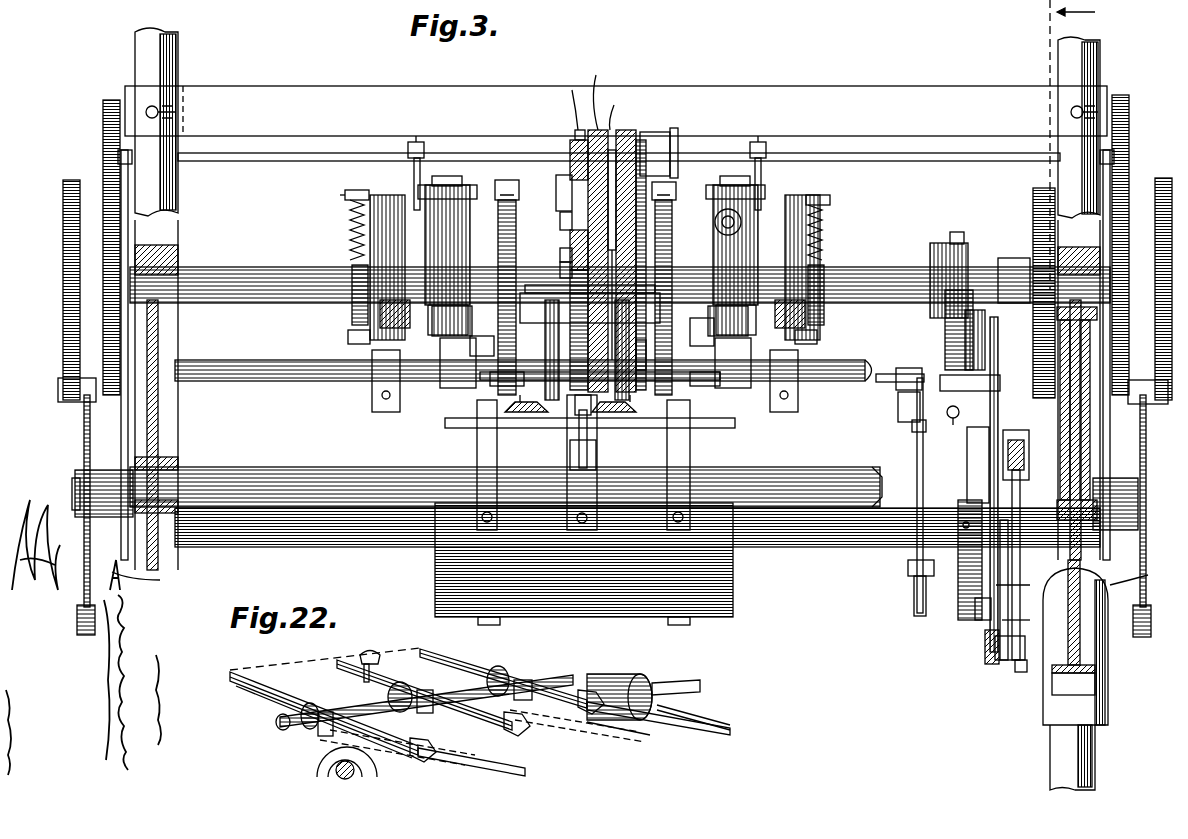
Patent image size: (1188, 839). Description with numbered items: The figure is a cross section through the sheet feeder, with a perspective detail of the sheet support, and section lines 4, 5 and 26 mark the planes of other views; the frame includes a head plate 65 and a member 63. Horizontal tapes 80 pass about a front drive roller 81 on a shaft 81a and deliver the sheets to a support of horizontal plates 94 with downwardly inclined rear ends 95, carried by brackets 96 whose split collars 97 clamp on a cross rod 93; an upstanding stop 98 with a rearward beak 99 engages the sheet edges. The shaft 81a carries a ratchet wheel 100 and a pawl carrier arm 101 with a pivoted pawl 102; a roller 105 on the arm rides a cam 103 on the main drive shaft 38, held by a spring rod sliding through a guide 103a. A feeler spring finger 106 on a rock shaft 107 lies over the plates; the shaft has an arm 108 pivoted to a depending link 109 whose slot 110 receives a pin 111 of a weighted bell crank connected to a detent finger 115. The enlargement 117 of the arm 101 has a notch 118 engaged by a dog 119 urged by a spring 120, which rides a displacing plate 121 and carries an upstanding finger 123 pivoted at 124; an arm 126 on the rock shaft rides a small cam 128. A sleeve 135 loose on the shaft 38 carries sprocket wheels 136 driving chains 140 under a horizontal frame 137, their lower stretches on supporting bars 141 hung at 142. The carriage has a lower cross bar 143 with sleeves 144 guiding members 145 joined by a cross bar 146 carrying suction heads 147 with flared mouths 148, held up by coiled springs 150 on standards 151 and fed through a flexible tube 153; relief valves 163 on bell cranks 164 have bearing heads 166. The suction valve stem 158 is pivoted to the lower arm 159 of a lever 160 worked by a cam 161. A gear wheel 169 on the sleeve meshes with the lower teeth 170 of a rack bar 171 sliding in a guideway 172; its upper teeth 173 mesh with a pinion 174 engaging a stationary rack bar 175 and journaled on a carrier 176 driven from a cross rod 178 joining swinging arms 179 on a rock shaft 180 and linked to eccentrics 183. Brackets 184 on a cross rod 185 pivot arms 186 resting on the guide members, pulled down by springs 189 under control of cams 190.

In FIG. 3, the section line 4 is at (1030, 560).
In FIG. 3, the section line 5 is at (745, 60).
In FIG. 3, the section line 26 is at (1060, 145).
In FIG. 3, the main drive shaft 38 is at (245, 270).
In FIG. 3, the supporting post 63 is at (1085, 743).
In FIG. 3, the head plate 65 is at (165, 245).
In FIG. 3, the forwardly bearing tapes 80 is at (500, 620).
In FIG. 22, the forwardly bearing tapes 80 is at (528, 770).
In FIG. 3, the front roller 81 is at (440, 560).
In FIG. 3, the shaft 81a is at (320, 550).
In FIG. 22, the shaft 81a is at (703, 698).
In FIG. 3, the cross rod 93 is at (290, 466).
In FIG. 22, the cross rod 93 is at (278, 722).
In FIG. 3, the horizontal plates 94 is at (466, 424).
In FIG. 22, the horizontal plates 94 is at (270, 680).
In FIG. 22, the downwardly inclined rear ends 95 is at (412, 746).
In FIG. 22, the brackets 96 is at (322, 710).
In FIG. 3, the split collars 97 is at (500, 519).
In FIG. 22, the split collars 97 is at (318, 730).
In FIG. 3, the upstanding stop 98 is at (583, 462).
In FIG. 22, the upstanding stop 98 is at (364, 678).
In FIG. 22, the hook or beak 99 is at (378, 654).
In FIG. 3, the ratchet wheel 100 is at (962, 512).
In FIG. 3, the pawl carrier arm 101 is at (990, 342).
In FIG. 3, the pivoted pawl 102 is at (952, 418).
In FIG. 3, the cam 103 is at (1033, 200).
In FIG. 3, the guide 103a is at (962, 392).
In FIG. 3, the roller 105 is at (1015, 280).
In FIG. 3, the feeler spring finger 106 is at (592, 410).
In FIG. 3, the rock shaft 107 is at (888, 360).
In FIG. 3, the arm 108 is at (898, 404).
In FIG. 3, the depending link 109 is at (916, 432).
In FIG. 3, the longitudinal slot 110 is at (912, 598).
In FIG. 3, the pin 111 is at (905, 570).
In FIG. 3, the reciprocatory detent finger 115 is at (1016, 430).
In FIG. 3, the enlargement 117 is at (1026, 590).
In FIG. 3, the notch 118 is at (1010, 622).
In FIG. 3, the pivoted dog 119 is at (990, 662).
In FIG. 3, the spring 120 is at (976, 628).
In FIG. 3, the displacing plate 121 is at (982, 636).
In FIG. 3, the upstanding finger 123 is at (1020, 490).
In FIG. 3, the pivot 124 is at (1021, 670).
In FIG. 3, the arm 126 is at (960, 334).
In FIG. 3, the small cam 128 is at (957, 232).
In FIG. 3, the sleeve 135 is at (590, 298).
In FIG. 3, the sprocket wheels 136 is at (500, 250).
In FIG. 3, the horizontal frame 137 is at (662, 153).
In FIG. 3, the sprocket chains 140 is at (696, 400).
In FIG. 3, the supporting bars 141 is at (702, 400).
In FIG. 3, the hangers 142 is at (560, 345).
In FIG. 3, the lower cross bar 143 is at (482, 346).
In FIG. 3, the upstanding sleeves 144 is at (460, 340).
In FIG. 3, the guide members 145 is at (466, 228).
In FIG. 3, the cross bar 146 is at (700, 330).
In FIG. 3, the suction heads 147 is at (552, 360).
In FIG. 3, the flared mouths 148 is at (540, 414).
In FIG. 3, the coiled springs 150 is at (594, 343).
In FIG. 3, the standards 151 is at (420, 300).
In FIG. 3, the flexible tube 153 is at (716, 222).
In FIG. 3, the valve stem 158 is at (1108, 650).
In FIG. 3, the lower arm 159 is at (88, 538).
In FIG. 3, the lever 160 is at (88, 425).
In FIG. 3, the cam 161 is at (66, 196).
In FIG. 3, the valves 163 is at (599, 250).
In FIG. 3, the bell cranks 164 is at (414, 170).
In FIG. 3, the bearing heads 166 is at (414, 140).
In FIG. 3, the gear wheel 169 is at (574, 266).
In FIG. 3, the lower teeth 170 is at (574, 250).
In FIG. 3, the reciprocatory rack bar 171 is at (575, 234).
In FIG. 3, the guideway 172 is at (605, 302).
In FIG. 3, the upper teeth 173 is at (574, 218).
In FIG. 3, the pinion 174 is at (574, 203).
In FIG. 3, the stationary rack bar 175 is at (576, 125).
In FIG. 3, the carrier 176 is at (614, 120).
In FIG. 3, the cross rod 178 is at (233, 162).
In FIG. 3, the swinging arms 179 is at (125, 178).
In FIG. 3, the rock shaft 180 is at (614, 604).
In FIG. 3, the eccentrics 183 is at (110, 100).
In FIG. 3, the upstanding brackets 184 is at (372, 385).
In FIG. 3, the cross rod 185 is at (268, 352).
In FIG. 3, the arms 186 is at (591, 174).
In FIG. 3, the springs 189 is at (352, 248).
In FIG. 3, the cams 190 is at (354, 262).